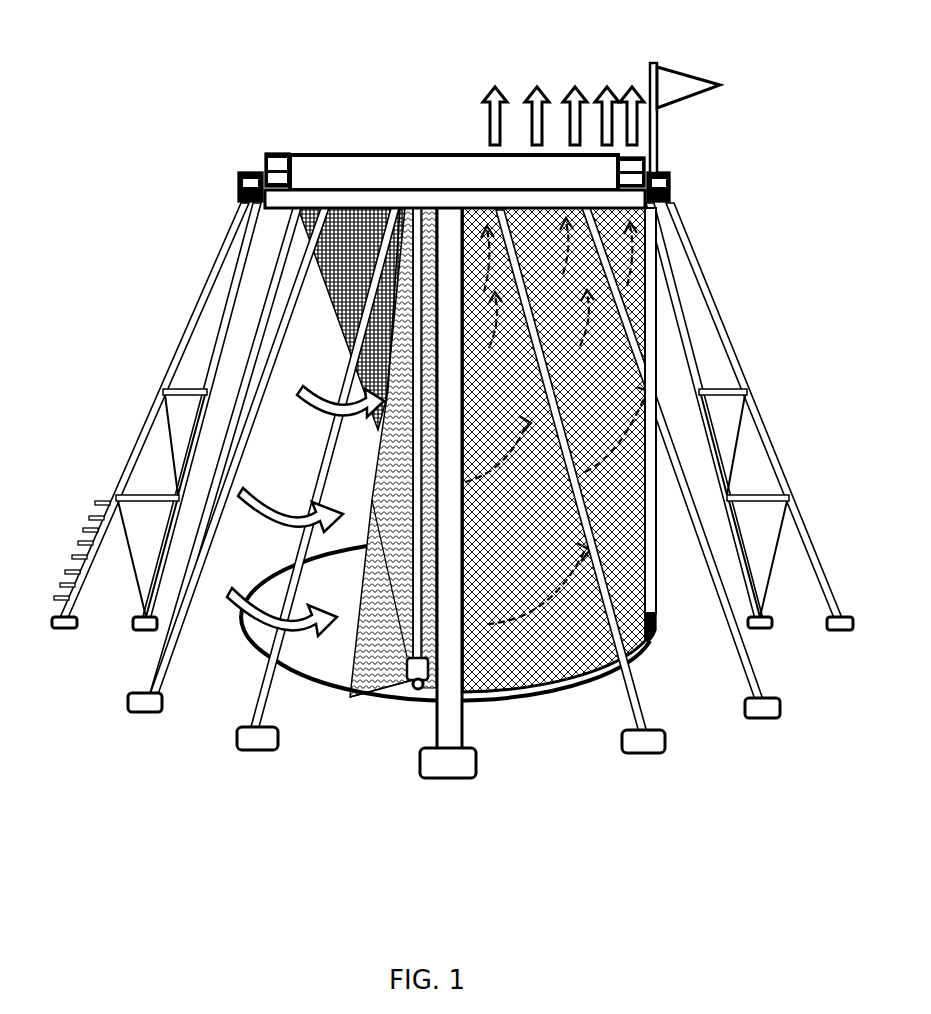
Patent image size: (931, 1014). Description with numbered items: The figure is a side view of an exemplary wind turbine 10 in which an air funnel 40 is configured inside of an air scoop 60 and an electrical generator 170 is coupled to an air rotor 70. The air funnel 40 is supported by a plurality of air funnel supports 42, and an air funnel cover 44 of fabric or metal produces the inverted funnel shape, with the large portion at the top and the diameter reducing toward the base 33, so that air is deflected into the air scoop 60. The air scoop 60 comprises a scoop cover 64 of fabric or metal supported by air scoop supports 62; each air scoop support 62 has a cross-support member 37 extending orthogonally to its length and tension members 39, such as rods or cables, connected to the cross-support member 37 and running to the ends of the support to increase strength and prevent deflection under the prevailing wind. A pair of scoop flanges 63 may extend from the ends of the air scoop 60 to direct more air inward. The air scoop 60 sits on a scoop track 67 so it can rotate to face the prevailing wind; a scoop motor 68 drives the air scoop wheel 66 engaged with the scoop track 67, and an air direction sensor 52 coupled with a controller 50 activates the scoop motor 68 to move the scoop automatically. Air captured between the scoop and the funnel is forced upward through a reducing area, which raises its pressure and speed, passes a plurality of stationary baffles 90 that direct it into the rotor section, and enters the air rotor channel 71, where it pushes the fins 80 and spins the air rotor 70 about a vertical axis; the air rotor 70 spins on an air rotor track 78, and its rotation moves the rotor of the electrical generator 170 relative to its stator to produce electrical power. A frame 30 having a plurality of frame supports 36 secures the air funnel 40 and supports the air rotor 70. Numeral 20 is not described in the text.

The wind turbine 10 is at (158, 112).
The ladder 20 is at (98, 505).
The frame 30 is at (140, 442).
The base 33 is at (570, 682).
The frame supports 36 is at (171, 383).
The cross-support member 37 is at (367, 457).
The tension members 39 is at (340, 578).
The air funnel 40 is at (362, 207).
The air funnel supports 42 is at (330, 328).
The air funnel cover 44 is at (412, 207).
The controller 50 is at (238, 188).
The air direction sensor 52 is at (684, 100).
The air scoop 60 is at (660, 610).
The air scoop supports 62 is at (468, 697).
The scoop flanges 63 is at (373, 506).
The scoop cover 64 is at (517, 697).
The air scoop wheel 66 is at (412, 695).
The scoop track 67 is at (256, 637).
The scoop motor 68 is at (383, 697).
The air rotor 70 is at (279, 155).
The air rotor channel 71 is at (291, 228).
The air rotor track 78 is at (300, 155).
The fins 80 is at (289, 165).
The baffles 90 is at (240, 205).
The electrical generator 170 is at (252, 172).